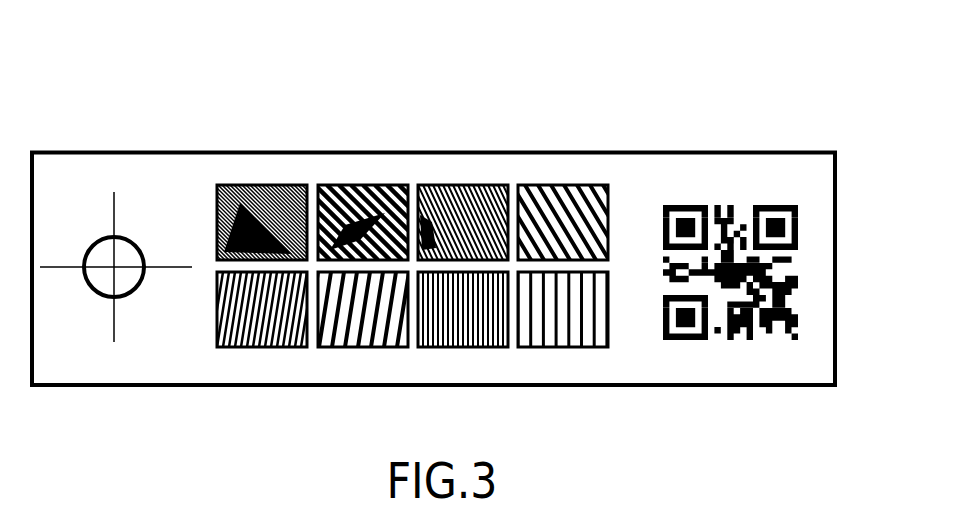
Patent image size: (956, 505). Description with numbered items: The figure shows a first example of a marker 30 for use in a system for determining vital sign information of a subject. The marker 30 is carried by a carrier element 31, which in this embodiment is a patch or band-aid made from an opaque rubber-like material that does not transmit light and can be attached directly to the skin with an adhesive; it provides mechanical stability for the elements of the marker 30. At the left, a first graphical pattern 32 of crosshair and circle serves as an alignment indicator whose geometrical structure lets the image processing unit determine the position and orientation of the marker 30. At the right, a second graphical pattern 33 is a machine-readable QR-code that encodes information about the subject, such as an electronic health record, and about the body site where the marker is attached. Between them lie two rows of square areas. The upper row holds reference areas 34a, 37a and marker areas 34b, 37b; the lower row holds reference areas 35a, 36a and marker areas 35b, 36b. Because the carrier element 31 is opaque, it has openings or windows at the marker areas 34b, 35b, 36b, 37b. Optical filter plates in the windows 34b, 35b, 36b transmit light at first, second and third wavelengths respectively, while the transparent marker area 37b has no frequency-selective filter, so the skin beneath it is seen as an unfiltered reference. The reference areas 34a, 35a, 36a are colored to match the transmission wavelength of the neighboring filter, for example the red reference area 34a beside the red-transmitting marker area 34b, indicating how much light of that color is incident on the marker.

The marker 30 is at (109, 80).
The carrier element 31 is at (98, 151).
The first graphical pattern 32 is at (118, 213).
The second graphical pattern 33 is at (748, 203).
The reference area 34a is at (265, 186).
The marker area 34b is at (365, 186).
The reference area 35a is at (263, 342).
The marker area 35b is at (363, 342).
The reference area 36a is at (463, 342).
The marker area 36b is at (563, 342).
The reference area 37a is at (465, 186).
The transparent marker area 37b is at (565, 186).